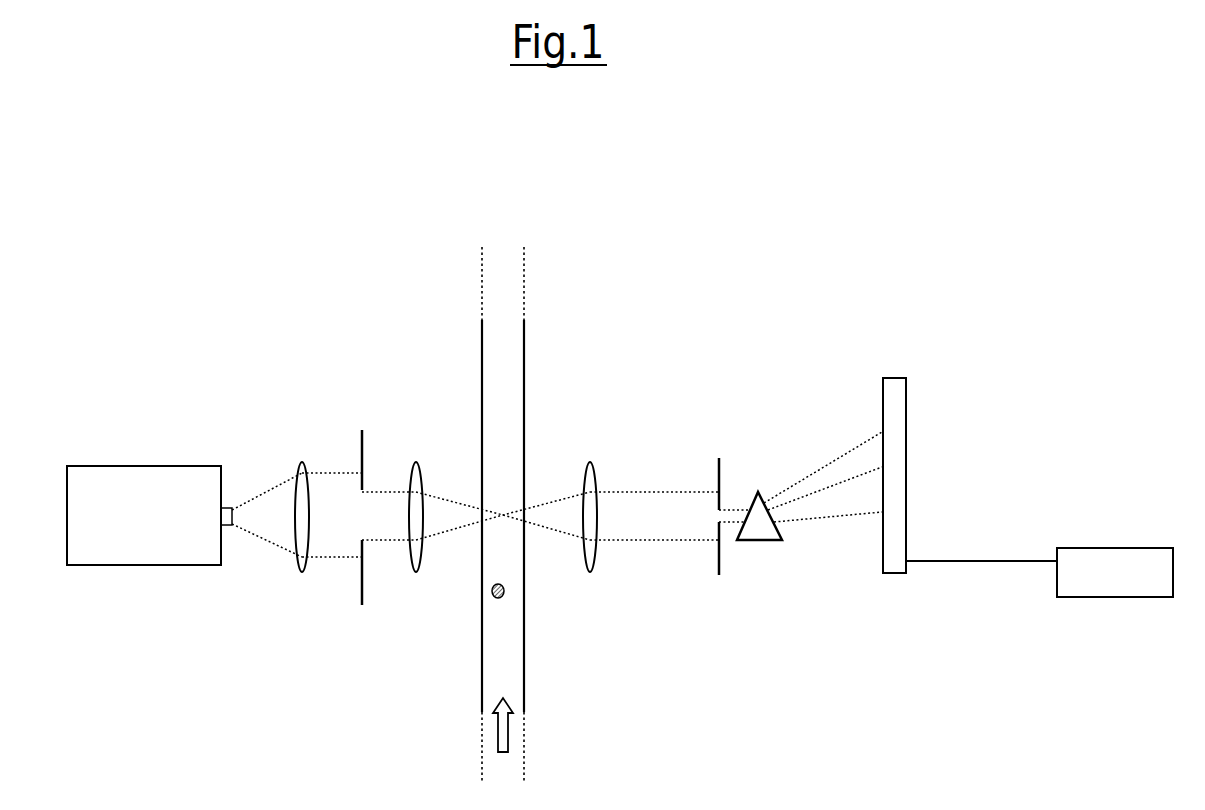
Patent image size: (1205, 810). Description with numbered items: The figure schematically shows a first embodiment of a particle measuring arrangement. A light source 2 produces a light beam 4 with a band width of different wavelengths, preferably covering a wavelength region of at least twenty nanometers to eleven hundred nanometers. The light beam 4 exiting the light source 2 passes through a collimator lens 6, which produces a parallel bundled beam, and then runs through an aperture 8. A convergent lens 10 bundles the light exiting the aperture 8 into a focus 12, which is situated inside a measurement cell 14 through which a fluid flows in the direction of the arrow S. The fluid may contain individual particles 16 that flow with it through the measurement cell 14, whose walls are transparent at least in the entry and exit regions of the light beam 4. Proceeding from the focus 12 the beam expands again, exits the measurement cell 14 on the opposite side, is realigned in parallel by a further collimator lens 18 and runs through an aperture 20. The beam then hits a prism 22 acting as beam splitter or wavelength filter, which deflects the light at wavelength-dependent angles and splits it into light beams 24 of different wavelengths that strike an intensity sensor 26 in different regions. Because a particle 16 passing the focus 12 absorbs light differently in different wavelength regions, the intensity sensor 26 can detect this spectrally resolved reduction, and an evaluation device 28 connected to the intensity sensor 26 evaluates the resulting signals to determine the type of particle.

The light source 2 is at (137, 550).
The light beam 4 is at (272, 483).
The collimator lens 6 is at (303, 460).
The aperture 8 is at (362, 425).
The convergent lens 10 is at (416, 460).
The focus 12 is at (502, 505).
The measurement cell 14 is at (527, 680).
The particle 16 is at (505, 598).
The collimator lens 18 is at (590, 458).
The aperture 20 is at (720, 455).
The prism 22 is at (755, 547).
The light beams of different wavelengths 24 is at (788, 493).
The intensity sensor 26 is at (902, 477).
The evaluation device 28 is at (1120, 587).
The arrow S is at (483, 728).